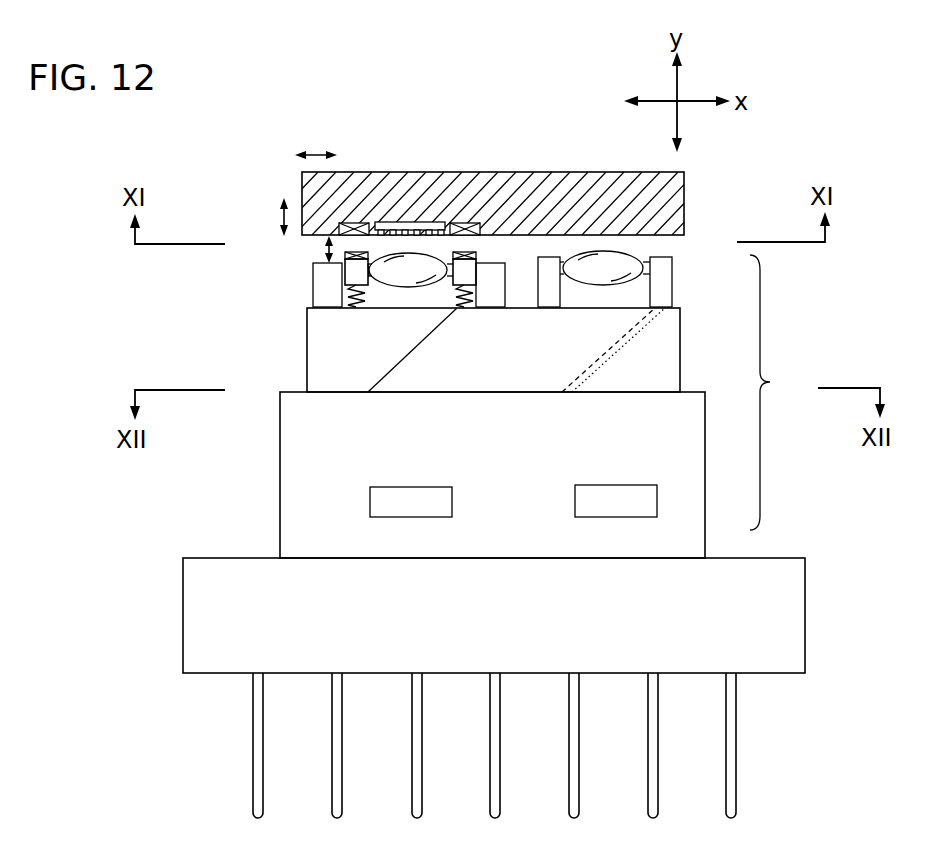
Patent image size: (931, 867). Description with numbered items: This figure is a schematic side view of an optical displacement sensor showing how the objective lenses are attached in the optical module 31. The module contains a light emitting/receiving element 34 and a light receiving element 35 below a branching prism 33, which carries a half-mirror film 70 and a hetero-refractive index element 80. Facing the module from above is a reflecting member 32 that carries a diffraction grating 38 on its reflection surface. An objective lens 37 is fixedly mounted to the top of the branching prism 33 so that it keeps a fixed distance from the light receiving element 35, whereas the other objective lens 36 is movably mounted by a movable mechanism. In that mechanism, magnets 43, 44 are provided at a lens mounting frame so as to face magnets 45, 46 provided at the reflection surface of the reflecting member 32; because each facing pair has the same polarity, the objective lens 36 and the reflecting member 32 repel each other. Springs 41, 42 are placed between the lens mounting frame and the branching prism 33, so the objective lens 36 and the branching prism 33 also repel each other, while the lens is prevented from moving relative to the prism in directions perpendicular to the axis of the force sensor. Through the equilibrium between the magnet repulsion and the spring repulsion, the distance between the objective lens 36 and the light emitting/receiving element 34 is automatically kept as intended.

The optical module 31 is at (544, 406).
The reflecting member 32 is at (692, 193).
The branching prism 33 is at (692, 350).
The light emitting/receiving element 34 is at (383, 502).
The light receiving element 35 is at (643, 503).
The objective lens 36 is at (400, 278).
The objective lens 37 is at (617, 260).
The diffraction grating 38 is at (418, 222).
The spring 41 is at (346, 295).
The spring 42 is at (466, 297).
The magnet 43 is at (330, 248).
The magnet 44 is at (474, 256).
The magnet 45 is at (353, 223).
The magnet 46 is at (465, 223).
The half-mirror film 70 is at (412, 352).
The hetero-refractive index element 80 is at (578, 372).